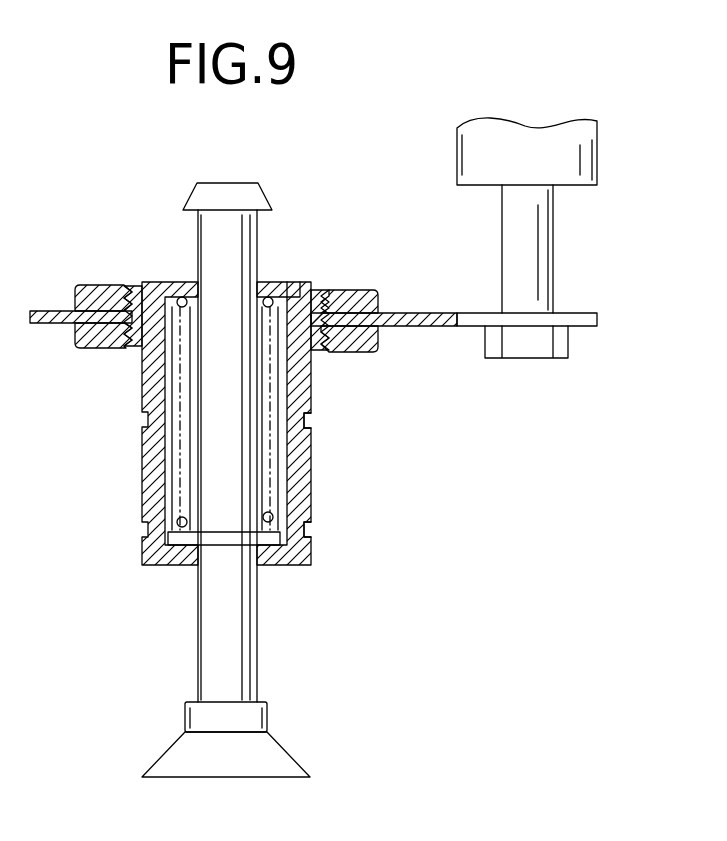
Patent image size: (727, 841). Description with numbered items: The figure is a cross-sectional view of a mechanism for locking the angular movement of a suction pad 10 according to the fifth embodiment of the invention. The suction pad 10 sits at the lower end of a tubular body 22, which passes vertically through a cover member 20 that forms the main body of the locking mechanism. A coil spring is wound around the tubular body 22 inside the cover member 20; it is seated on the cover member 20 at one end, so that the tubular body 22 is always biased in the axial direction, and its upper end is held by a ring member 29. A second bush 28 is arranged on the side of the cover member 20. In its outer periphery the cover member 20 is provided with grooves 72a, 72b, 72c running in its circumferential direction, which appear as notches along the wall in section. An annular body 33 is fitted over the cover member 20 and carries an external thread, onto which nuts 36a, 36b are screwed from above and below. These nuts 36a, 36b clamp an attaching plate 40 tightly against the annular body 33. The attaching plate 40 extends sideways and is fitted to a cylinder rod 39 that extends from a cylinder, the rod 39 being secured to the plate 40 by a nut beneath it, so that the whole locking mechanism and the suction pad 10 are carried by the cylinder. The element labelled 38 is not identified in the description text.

The suction pad 10 is at (280, 757).
The cover member 20 is at (226, 398).
The tubular body 22 is at (268, 247).
The second bush 28 is at (303, 382).
The ring member 29 is at (272, 515).
The annular body 33 is at (133, 283).
The nut 36a is at (88, 285).
The nut 36b is at (90, 350).
The bolt 38 is at (551, 238).
The cylinder rod 39 is at (545, 283).
The attaching plate 40 is at (480, 320).
The groove 72a is at (300, 293).
The groove 72b is at (312, 420).
The groove 72c is at (312, 530).